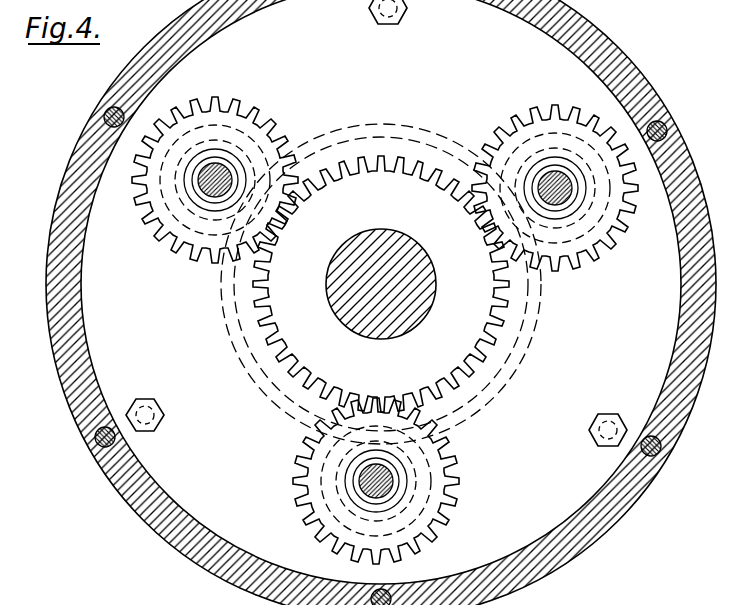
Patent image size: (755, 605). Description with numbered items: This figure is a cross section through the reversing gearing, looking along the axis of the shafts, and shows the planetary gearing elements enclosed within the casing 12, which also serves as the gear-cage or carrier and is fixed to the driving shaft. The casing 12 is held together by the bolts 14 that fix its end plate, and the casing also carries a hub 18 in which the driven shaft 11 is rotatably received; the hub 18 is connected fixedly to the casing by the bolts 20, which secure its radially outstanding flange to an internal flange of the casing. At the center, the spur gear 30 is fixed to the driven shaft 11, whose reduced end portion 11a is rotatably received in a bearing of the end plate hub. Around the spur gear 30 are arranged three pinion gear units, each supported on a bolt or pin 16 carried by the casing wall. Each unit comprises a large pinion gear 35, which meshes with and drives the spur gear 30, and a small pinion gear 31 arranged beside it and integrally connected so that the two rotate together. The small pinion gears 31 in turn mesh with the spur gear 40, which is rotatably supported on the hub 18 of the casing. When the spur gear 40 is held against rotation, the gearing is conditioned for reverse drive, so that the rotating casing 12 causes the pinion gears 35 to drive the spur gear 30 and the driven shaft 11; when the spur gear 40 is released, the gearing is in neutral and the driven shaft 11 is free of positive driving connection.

The casing 12 is at (633, 73).
The bolts 14 is at (668, 130).
The bolts 20 is at (406, 14).
The spur gear 30 is at (420, 182).
The end portion of the driven shaft 11a is at (377, 245).
The spur gear 40 is at (540, 327).
The small pinion gears 31 is at (420, 513).
The large pinion gears 35 is at (267, 137).
The bolts or pins 16 is at (220, 170).
The hub 18 is at (604, 602).
The driven shaft 11 is at (672, 602).